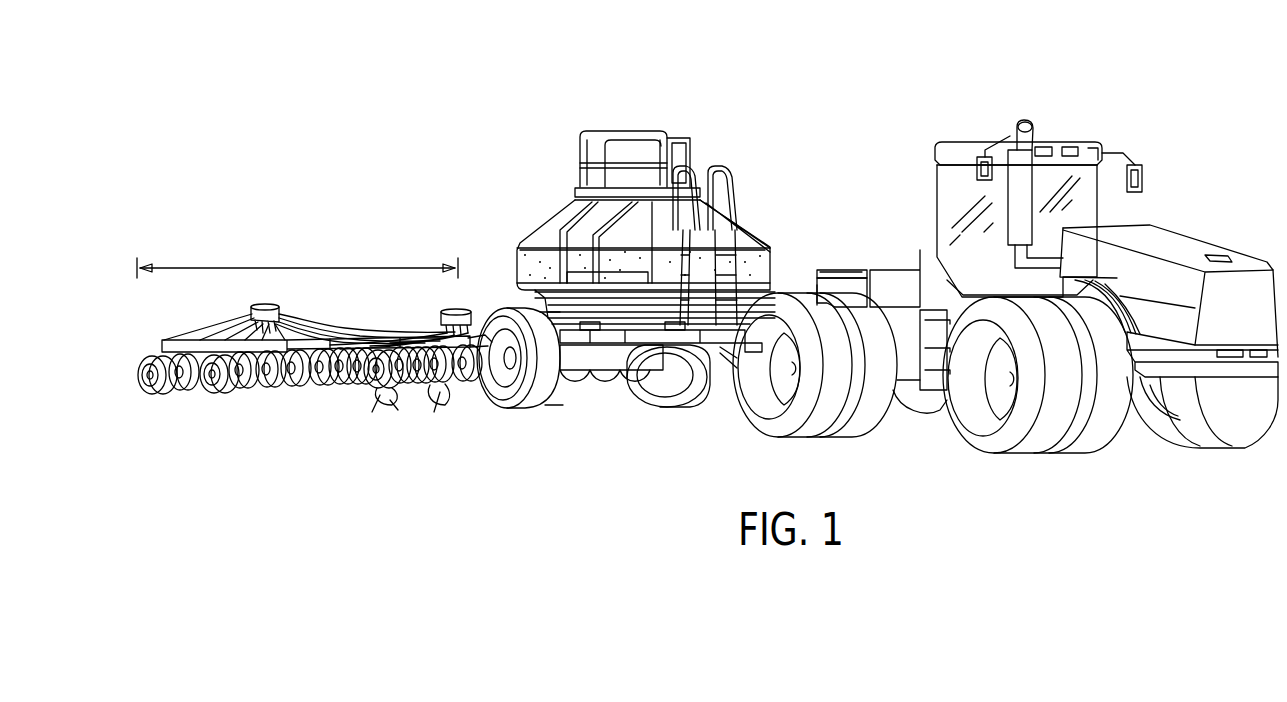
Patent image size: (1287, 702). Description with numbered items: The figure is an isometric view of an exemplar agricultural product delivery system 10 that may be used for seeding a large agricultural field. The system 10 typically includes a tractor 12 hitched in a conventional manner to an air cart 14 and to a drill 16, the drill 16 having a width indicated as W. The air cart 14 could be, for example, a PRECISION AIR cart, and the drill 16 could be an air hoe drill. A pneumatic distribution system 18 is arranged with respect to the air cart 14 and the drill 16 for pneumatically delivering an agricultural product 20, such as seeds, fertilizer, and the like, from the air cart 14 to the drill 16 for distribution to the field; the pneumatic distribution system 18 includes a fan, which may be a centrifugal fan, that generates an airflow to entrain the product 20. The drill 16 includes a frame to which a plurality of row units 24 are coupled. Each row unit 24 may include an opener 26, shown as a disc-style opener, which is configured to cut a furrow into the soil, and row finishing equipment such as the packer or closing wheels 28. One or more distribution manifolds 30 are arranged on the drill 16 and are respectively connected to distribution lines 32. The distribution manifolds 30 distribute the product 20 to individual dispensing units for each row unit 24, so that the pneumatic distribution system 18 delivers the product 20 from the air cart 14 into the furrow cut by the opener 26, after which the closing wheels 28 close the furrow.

The agricultural product delivery system 10 is at (897, 90).
The tractor 12 is at (1228, 240).
The air cart 14 is at (773, 188).
The drill 16 is at (332, 212).
The pneumatic distribution system 18 is at (468, 282).
The agricultural product 20 is at (537, 257).
The row unit 24 is at (372, 415).
The opener 26 is at (440, 400).
The closing wheels 28 is at (380, 410).
The distribution manifold 30 is at (264, 303).
The distribution lines 32 is at (394, 318).